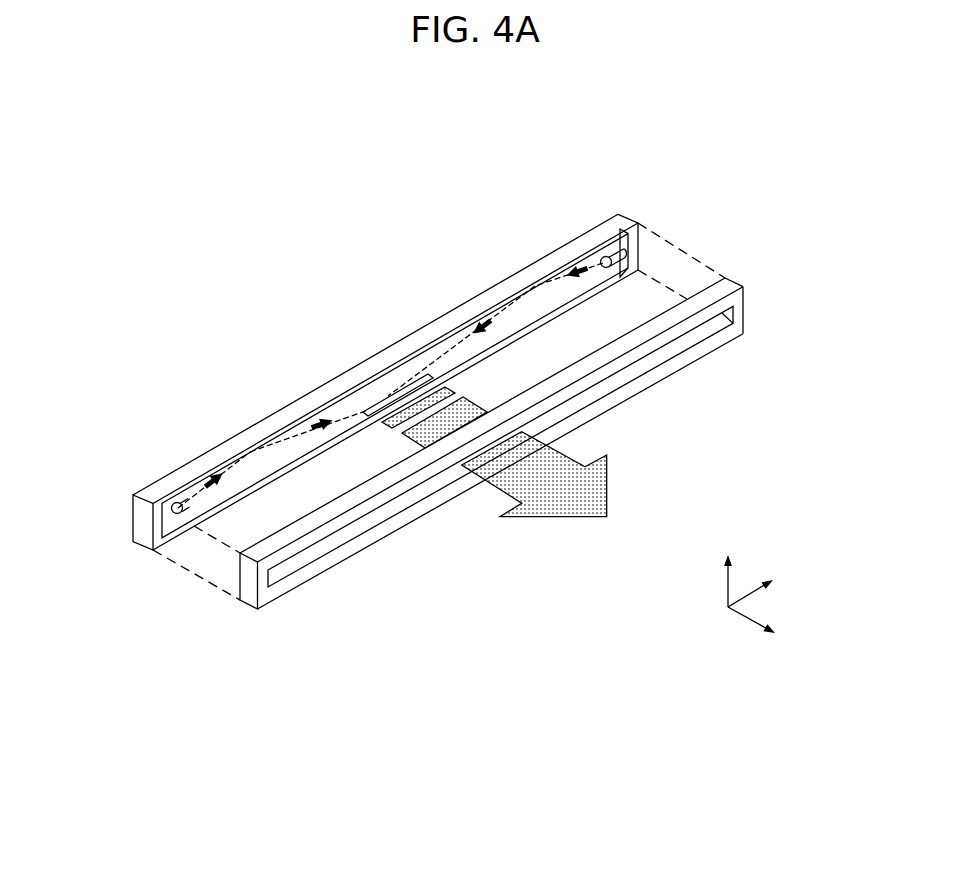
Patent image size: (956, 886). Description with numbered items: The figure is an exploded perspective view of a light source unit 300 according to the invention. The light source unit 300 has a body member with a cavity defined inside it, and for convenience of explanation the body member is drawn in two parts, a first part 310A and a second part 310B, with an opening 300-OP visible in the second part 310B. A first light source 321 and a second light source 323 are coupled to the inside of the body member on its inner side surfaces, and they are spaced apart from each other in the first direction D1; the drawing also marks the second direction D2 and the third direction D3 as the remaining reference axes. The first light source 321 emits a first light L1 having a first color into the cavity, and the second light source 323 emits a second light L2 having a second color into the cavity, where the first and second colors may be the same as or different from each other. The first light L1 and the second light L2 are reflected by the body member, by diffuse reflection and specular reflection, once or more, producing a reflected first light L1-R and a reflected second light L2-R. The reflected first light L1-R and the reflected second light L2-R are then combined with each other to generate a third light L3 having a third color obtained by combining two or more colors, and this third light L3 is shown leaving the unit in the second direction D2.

The light source unit 300 is at (439, 380).
The first part 310A is at (622, 220).
The second part 310B is at (506, 415).
The opening 300-OP is at (317, 544).
The first light source 321 is at (175, 508).
The second light source 323 is at (618, 250).
The first light L1 is at (215, 472).
The reflected first light L1-R is at (315, 422).
The second light L2 is at (582, 262).
The reflected second light L2-R is at (482, 320).
The third light L3 is at (558, 513).
The first direction D1 is at (761, 579).
The second direction D2 is at (766, 632).
The third direction D3 is at (729, 568).